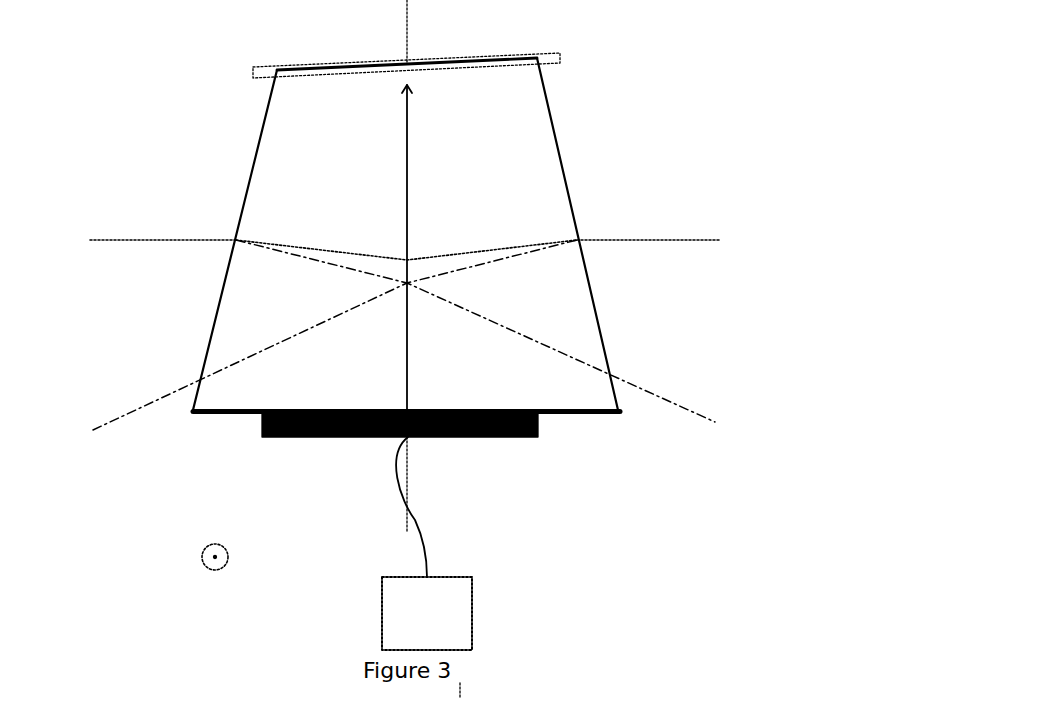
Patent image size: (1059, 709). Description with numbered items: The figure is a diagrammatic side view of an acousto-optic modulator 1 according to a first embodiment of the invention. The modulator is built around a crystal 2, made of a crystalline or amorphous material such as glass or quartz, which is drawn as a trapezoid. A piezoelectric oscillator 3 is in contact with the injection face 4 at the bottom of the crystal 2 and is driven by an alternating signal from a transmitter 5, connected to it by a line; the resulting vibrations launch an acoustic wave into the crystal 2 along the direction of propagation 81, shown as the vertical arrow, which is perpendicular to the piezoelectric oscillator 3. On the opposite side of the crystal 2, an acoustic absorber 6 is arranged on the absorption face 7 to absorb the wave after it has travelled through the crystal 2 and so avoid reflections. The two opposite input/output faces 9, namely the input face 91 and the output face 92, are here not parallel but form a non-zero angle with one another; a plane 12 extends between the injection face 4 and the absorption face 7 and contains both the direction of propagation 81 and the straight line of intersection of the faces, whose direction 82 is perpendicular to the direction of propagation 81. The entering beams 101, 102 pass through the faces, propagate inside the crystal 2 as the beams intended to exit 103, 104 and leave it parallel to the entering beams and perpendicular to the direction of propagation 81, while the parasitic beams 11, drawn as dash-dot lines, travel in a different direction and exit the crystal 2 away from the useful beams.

The acousto-optic modulator 1 is at (652, 516).
The crystal 2 is at (578, 380).
The piezoelectric oscillator 3 is at (350, 438).
The injection face 4 is at (240, 414).
The transmitter 5 is at (418, 608).
The acoustic absorber 6 is at (373, 70).
The absorption face 7 is at (432, 64).
The input/output faces 9 is at (235, 240).
The input face 91 is at (262, 135).
The output face 92 is at (560, 155).
The parasitic beams 11 is at (135, 392).
The plane 12 is at (410, 462).
The direction of propagation 81 is at (410, 160).
The direction of the straight line of intersection 82 is at (228, 555).
The entering beam 101 is at (135, 242).
The entering beam 102 is at (675, 218).
The beam intended to exit 103 is at (328, 252).
The beam intended to exit 104 is at (406, 250).